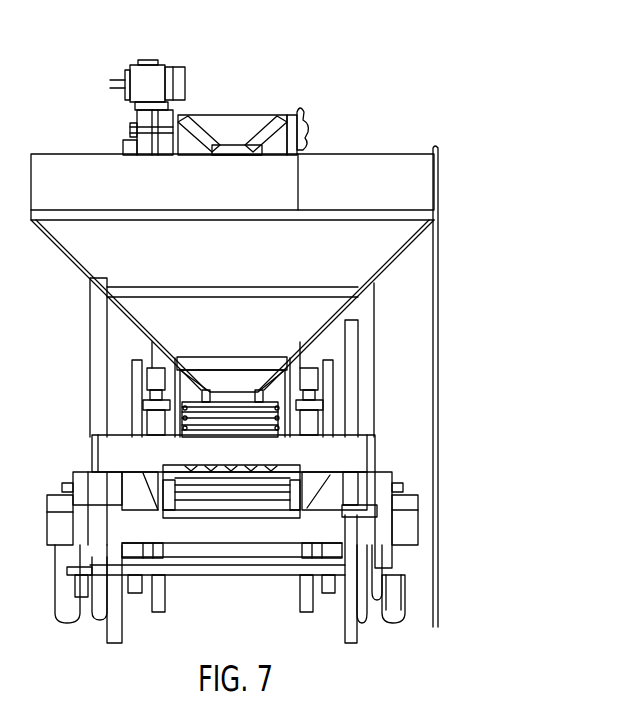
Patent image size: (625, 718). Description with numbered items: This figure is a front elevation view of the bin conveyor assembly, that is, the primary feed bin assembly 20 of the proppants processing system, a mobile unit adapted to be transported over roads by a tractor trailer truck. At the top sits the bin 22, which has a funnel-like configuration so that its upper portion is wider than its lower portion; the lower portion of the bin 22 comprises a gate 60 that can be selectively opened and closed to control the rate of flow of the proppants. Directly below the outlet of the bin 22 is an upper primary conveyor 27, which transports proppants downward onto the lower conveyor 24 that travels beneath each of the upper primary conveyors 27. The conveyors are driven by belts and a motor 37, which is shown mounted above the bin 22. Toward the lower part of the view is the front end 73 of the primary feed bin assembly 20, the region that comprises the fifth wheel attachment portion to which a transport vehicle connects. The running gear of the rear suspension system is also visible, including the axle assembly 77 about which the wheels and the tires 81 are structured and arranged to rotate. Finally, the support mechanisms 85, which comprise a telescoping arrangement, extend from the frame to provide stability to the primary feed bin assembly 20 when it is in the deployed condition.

The primary feed bin assembly 20 is at (540, 198).
The bin 22 is at (366, 152).
The lower conveyor 24 is at (297, 495).
The upper primary conveyor 27 is at (260, 408).
The motor 37 is at (185, 90).
The gate 60 is at (235, 392).
The front end 73 is at (386, 450).
The axle assembly 77 is at (207, 566).
The tire 81 is at (407, 612).
The support mechanism 85 is at (382, 508).